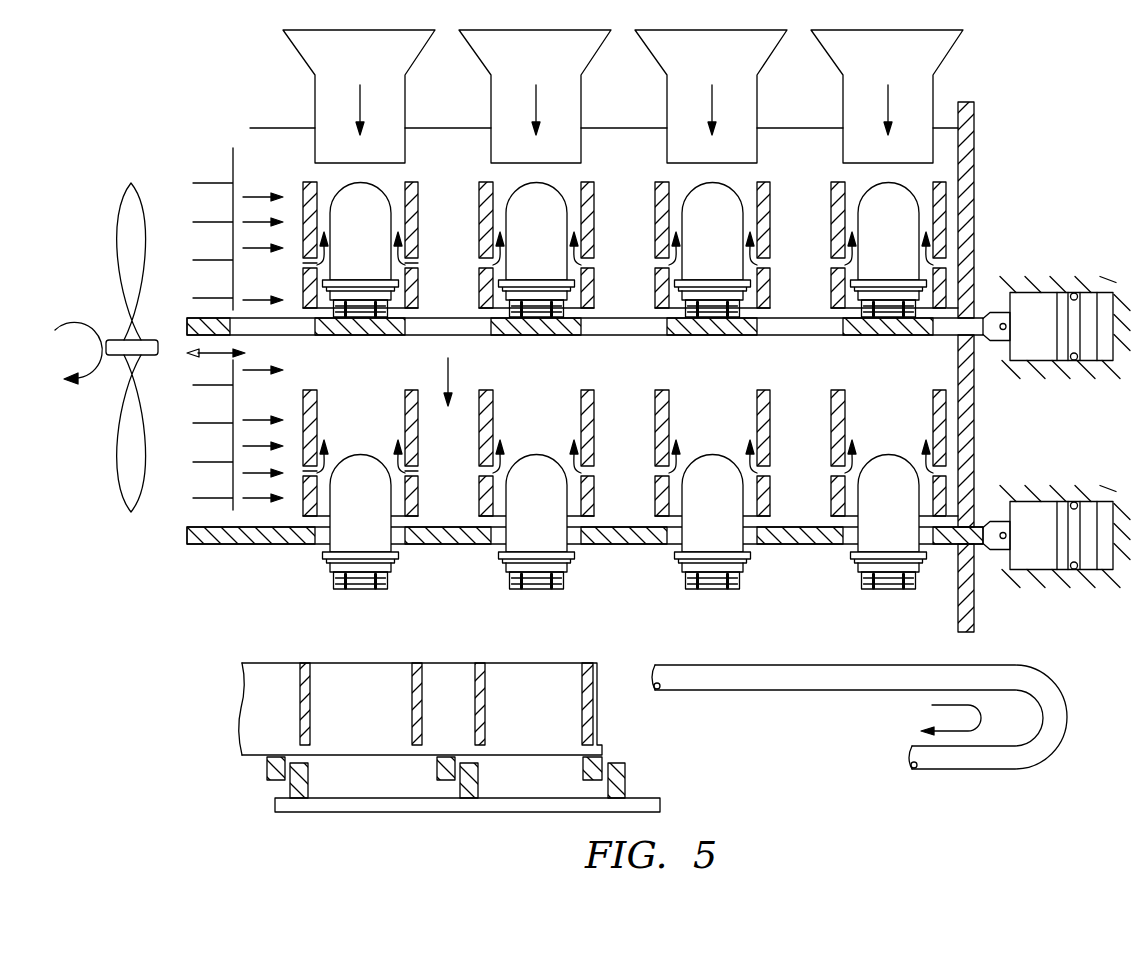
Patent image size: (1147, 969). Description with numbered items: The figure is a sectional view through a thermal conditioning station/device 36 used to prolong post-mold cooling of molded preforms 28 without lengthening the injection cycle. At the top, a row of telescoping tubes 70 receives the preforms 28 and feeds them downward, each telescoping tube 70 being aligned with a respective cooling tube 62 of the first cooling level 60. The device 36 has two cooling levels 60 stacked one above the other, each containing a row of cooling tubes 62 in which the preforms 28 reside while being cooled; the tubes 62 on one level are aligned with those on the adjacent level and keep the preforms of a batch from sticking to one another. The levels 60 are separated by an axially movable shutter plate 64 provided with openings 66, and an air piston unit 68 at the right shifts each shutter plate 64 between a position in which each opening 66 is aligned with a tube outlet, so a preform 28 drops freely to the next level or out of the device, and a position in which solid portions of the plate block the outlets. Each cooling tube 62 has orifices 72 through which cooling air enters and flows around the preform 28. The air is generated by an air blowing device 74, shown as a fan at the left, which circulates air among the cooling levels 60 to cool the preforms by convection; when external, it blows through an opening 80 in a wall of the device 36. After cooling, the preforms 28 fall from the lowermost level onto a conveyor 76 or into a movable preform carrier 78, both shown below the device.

The preform 28 is at (362, 202).
The thermal conditioning station/device 36 is at (993, 115).
The cooling level 60 is at (272, 185).
The cooling tube 62 is at (412, 193).
The shutter plate 64 is at (863, 338).
The opening 66 is at (285, 331).
The air piston unit 68 is at (1020, 292).
The telescoping tube 70 is at (298, 52).
The orifice 72 is at (305, 265).
The air blowing device 74 is at (108, 195).
The conveyor 76 is at (757, 673).
The movable preform carrier 78 is at (558, 680).
The opening 80 is at (233, 500).